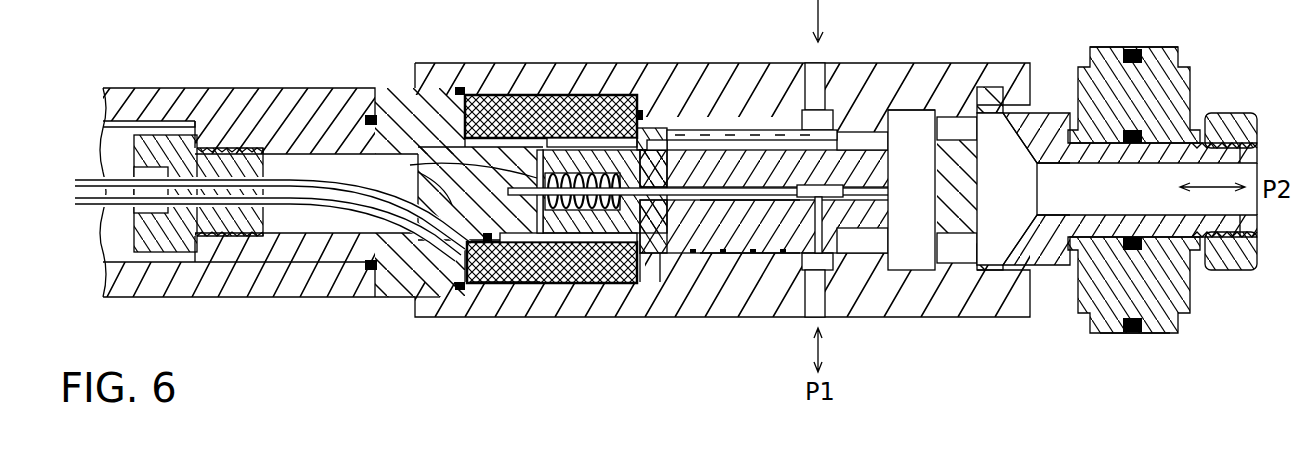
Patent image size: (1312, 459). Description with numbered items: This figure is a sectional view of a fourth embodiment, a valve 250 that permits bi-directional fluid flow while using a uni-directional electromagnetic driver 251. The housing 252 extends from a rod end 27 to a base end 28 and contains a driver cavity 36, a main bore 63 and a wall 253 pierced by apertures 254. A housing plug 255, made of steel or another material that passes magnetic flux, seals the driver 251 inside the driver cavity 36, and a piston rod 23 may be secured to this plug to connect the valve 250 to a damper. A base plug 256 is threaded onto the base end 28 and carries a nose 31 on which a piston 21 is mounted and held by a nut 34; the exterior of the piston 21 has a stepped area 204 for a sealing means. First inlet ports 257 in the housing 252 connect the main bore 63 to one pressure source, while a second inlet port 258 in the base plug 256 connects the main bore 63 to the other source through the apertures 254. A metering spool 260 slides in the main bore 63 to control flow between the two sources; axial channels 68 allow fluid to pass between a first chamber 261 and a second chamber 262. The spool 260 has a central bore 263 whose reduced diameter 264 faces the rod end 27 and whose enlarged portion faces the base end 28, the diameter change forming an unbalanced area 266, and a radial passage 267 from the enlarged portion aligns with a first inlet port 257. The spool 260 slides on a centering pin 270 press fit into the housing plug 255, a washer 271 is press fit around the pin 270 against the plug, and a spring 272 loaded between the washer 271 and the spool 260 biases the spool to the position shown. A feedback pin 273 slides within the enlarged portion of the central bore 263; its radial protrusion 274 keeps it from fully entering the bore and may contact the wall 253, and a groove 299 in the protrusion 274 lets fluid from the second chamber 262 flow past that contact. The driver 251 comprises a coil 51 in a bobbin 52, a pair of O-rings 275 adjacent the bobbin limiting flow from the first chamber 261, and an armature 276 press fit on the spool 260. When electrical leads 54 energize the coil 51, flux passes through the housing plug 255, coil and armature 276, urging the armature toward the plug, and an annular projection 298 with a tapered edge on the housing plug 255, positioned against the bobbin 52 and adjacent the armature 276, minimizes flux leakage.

The piston 21 is at (1085, 300).
The piston rod 23 is at (165, 298).
The rod end 27 is at (360, 318).
The base end 28 is at (1218, 91).
The nose 31 is at (1260, 238).
The nut 34 is at (1232, 277).
The driver cavity 36 is at (485, 243).
The coil 51 is at (495, 292).
The bobbin 52 is at (573, 262).
The electrical leads 54 is at (85, 212).
The main bore 63 is at (745, 130).
The axial channels 68 is at (700, 130).
The stepped area 204 is at (1175, 320).
The valve 250 is at (731, 186).
The uni-directional electromagnetic driver 251 is at (553, 84).
The housing 252 is at (1032, 62).
The wall 253 is at (980, 192).
The apertures 254 is at (957, 117).
The housing plug 255 is at (300, 120).
The base plug 256 is at (1082, 243).
The first inlet ports 257 is at (823, 62).
The second inlet port 258 is at (1062, 163).
The metering spool 260 is at (797, 260).
The first chamber 261 is at (660, 128).
The second chamber 262 is at (905, 270).
The central bore 263 is at (777, 317).
The reduced diameter 264 is at (785, 280).
The unbalanced area 266 is at (800, 185).
The passage 267 is at (862, 241).
The centering pin 270 is at (518, 292).
The washer 271 is at (454, 177).
The spring 272 is at (600, 173).
The feedback pin 273 is at (905, 110).
The radial protrusion 274 is at (968, 112).
The O-rings 275 is at (438, 306).
The armature 276 is at (693, 290).
The annular projection 298 is at (600, 290).
The groove 299 is at (957, 128).